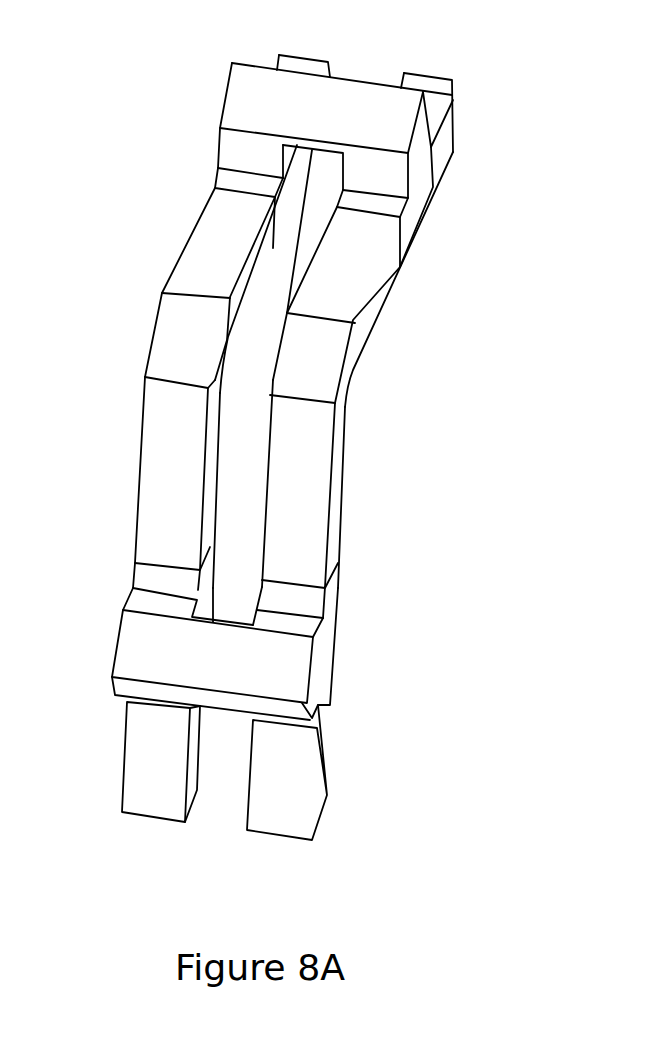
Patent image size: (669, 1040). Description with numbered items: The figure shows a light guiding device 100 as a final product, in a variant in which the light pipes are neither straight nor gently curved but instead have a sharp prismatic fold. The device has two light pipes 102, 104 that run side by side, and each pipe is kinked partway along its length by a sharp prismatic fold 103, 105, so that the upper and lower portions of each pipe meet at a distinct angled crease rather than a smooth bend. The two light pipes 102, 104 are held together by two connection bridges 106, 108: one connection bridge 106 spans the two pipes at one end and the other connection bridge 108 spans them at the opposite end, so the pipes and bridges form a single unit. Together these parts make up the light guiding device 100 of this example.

The light guiding device 100 is at (497, 53).
The light pipe 102 is at (158, 452).
The sharp prismatic fold 103 is at (172, 332).
The light pipe 104 is at (307, 458).
The sharp prismatic fold 105 is at (322, 357).
The connection bridge 106 is at (245, 92).
The connection bridge 108 is at (133, 648).